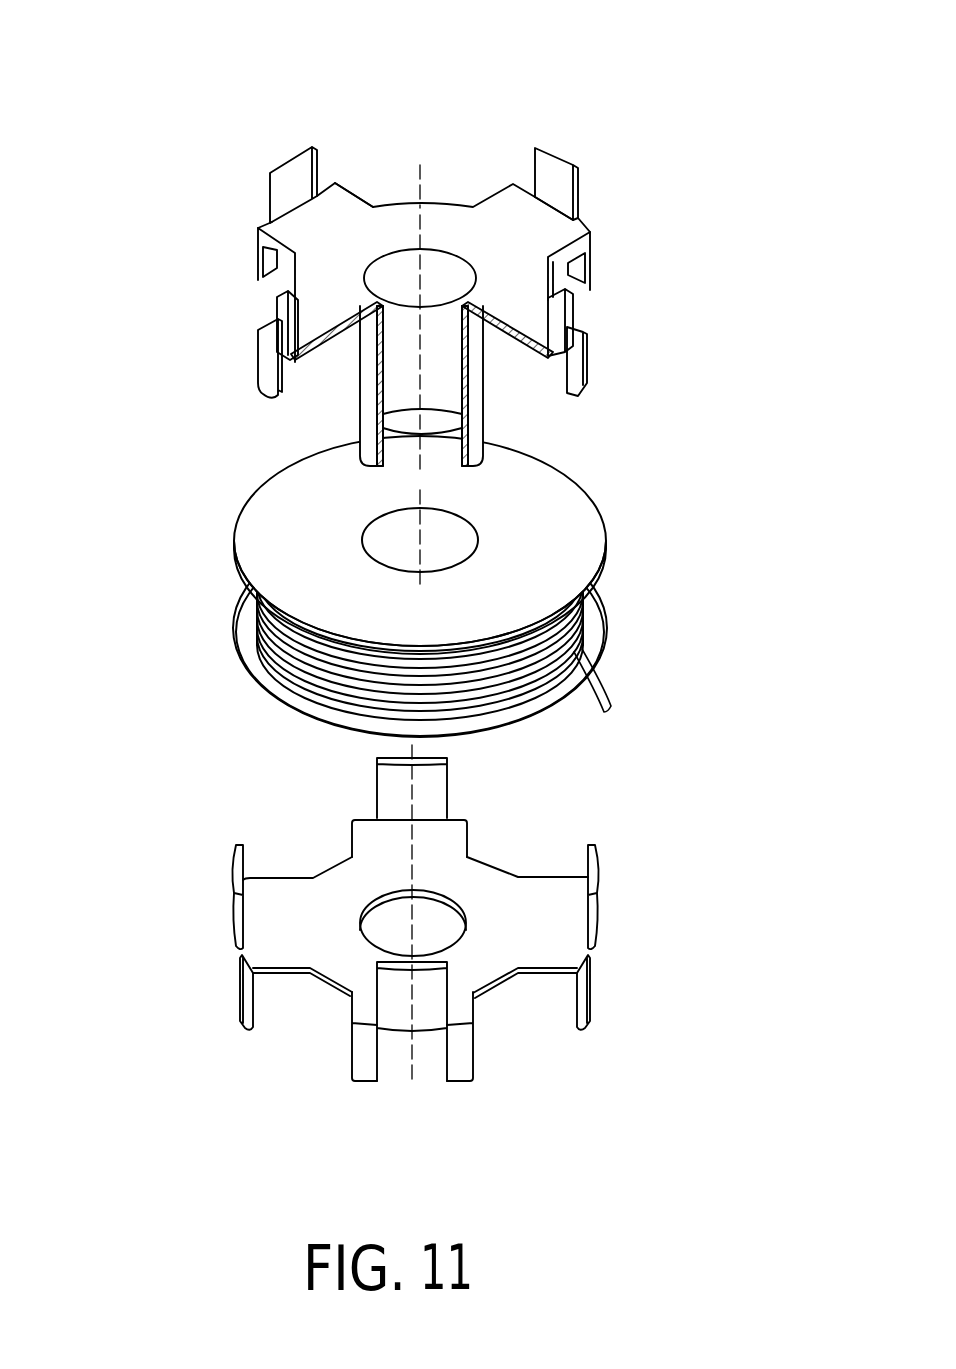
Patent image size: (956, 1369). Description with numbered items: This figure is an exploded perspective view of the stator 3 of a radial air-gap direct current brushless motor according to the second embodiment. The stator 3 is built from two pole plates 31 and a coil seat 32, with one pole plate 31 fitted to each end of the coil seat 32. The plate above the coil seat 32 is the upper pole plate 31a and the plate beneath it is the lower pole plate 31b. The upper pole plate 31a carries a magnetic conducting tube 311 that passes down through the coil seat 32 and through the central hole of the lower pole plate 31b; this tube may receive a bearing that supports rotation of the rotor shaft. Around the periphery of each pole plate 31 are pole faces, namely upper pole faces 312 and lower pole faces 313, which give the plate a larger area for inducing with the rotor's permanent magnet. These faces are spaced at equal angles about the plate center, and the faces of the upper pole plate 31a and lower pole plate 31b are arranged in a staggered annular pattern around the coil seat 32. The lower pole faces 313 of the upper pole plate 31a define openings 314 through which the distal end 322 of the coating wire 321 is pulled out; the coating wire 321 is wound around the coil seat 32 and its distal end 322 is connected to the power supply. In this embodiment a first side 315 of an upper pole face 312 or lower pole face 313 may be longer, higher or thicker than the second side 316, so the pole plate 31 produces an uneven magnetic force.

The stator 3 is at (130, 950).
The pole plate 31 is at (370, 126).
The upper pole plate 31a is at (503, 215).
The lower pole plate 31b is at (497, 952).
The magnetic conducting tube 311 is at (485, 378).
The upper pole face 312 is at (292, 156).
The lower pole face 313 is at (258, 263).
The opening 314 is at (295, 366).
The first side 315 is at (580, 190).
The second side 316 is at (536, 147).
The coil seat 32 is at (580, 517).
The coating wire 321 is at (580, 617).
The distal end 322 is at (604, 685).